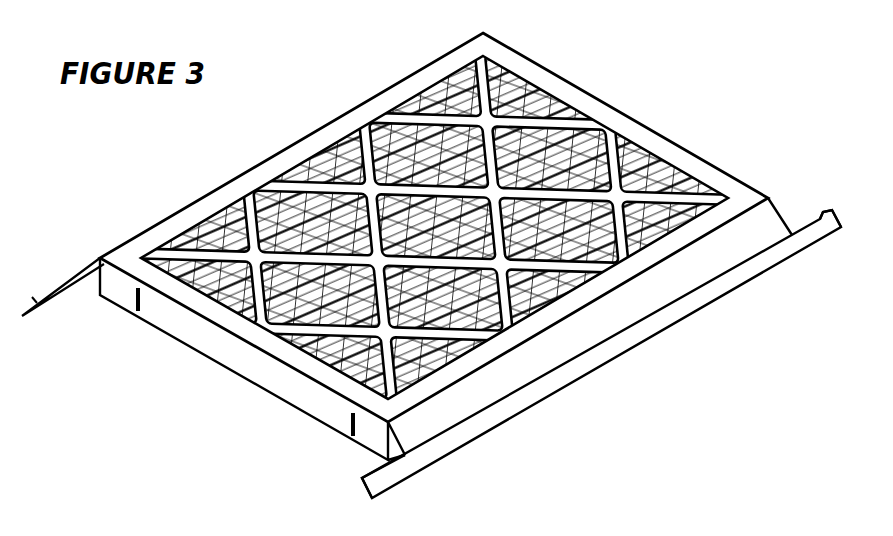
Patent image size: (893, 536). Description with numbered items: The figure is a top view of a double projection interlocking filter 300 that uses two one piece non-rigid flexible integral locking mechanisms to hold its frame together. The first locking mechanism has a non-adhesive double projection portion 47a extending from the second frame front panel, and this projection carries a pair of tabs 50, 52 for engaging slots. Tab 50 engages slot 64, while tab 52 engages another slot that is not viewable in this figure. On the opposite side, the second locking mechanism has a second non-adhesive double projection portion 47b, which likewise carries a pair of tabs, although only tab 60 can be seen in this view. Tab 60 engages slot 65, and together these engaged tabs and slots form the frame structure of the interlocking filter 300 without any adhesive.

The double projection interlocking filter 300 is at (652, 78).
The non-adhesive double projection portion 47a is at (638, 343).
The second non-adhesive double projection portion 47b is at (82, 270).
The tab 50 is at (390, 478).
The tab 52 is at (818, 219).
The tab 60 is at (58, 289).
The slot 64 is at (350, 430).
The slot 65 is at (135, 308).